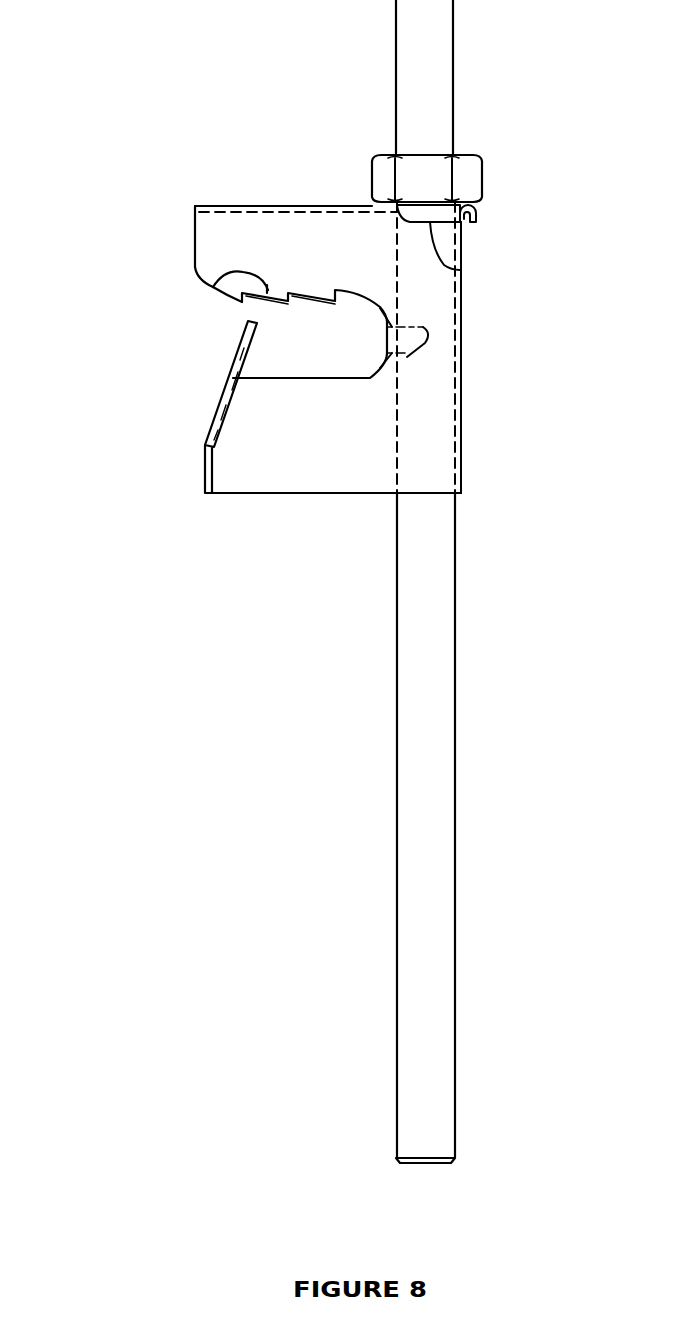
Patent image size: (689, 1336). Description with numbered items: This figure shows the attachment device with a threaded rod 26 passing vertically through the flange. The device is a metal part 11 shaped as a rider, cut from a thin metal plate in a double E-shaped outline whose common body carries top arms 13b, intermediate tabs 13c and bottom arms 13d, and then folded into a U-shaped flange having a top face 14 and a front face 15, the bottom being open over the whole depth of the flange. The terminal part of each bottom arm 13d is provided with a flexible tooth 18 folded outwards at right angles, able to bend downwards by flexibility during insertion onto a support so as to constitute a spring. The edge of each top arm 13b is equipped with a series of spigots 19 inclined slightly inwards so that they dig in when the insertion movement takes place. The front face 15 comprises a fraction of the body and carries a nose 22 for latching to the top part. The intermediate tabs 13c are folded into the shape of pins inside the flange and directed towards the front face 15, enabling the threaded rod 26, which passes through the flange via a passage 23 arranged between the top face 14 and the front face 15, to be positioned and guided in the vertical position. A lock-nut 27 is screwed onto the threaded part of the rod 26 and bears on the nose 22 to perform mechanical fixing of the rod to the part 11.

The metal part 11 is at (133, 553).
The top arm 13b is at (313, 243).
The intermediate tab 13c is at (407, 338).
The bottom arm 13d is at (312, 473).
The top face 14 is at (262, 210).
The front face 15 is at (460, 392).
The flexible tooth 18 is at (235, 363).
The spigot 19 is at (232, 278).
The nose 22 is at (478, 214).
The passage 23 is at (460, 270).
The threaded rod 26 is at (423, 460).
The lock-nut 27 is at (460, 175).